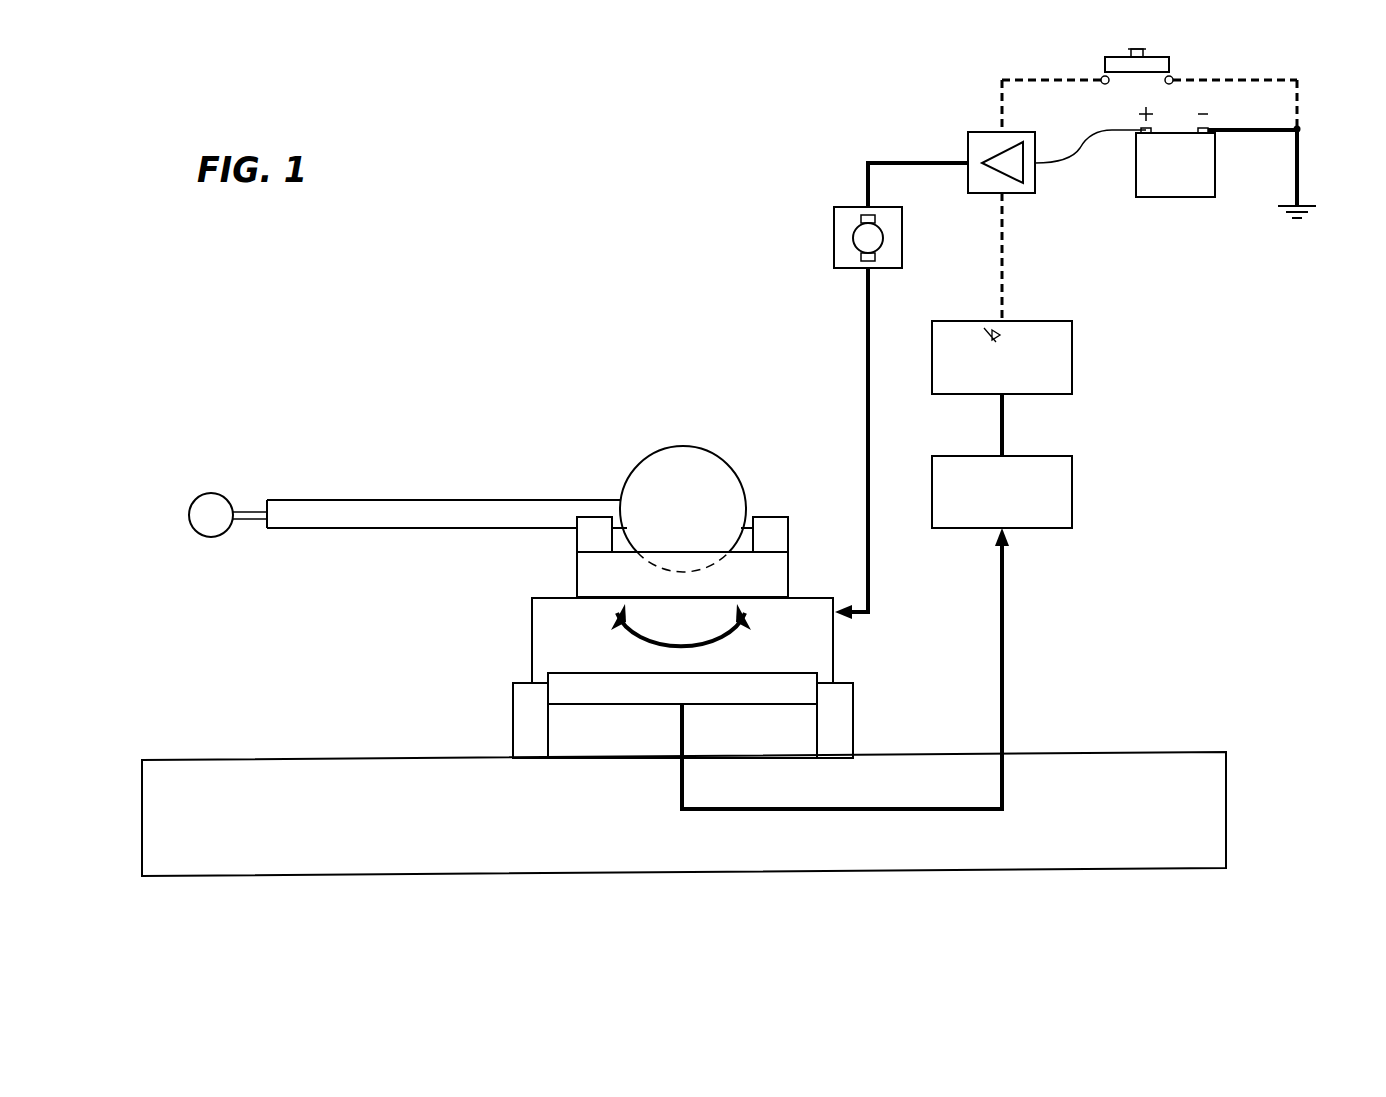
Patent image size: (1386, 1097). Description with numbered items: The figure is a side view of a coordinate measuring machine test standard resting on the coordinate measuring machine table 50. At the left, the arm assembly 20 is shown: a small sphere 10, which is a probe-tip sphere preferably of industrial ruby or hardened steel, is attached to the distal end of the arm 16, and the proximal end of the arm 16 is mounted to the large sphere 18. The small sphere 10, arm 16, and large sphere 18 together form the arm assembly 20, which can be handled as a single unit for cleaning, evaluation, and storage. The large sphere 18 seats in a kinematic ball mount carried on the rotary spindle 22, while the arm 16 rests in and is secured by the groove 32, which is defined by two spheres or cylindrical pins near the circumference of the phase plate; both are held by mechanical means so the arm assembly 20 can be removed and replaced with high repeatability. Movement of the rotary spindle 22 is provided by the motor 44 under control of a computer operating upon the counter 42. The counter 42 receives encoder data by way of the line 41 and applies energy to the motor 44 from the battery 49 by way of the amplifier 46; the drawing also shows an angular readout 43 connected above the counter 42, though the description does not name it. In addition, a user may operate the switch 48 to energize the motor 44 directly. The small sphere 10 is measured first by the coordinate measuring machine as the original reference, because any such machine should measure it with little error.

The small sphere 10 is at (214, 503).
The arm 16 is at (475, 498).
The large sphere 18 is at (694, 447).
The arm assembly 20 is at (334, 486).
The rotary spindle 22 is at (850, 643).
The groove 32 is at (556, 543).
The line 41 is at (1003, 796).
The counter 42 is at (1072, 488).
The angle display 43 is at (960, 322).
The motor 44 is at (846, 270).
The amplifier 46 is at (1035, 140).
The switch 48 is at (1160, 52).
The battery 49 is at (1133, 193).
The coordinate measuring machine table 50 is at (1097, 752).